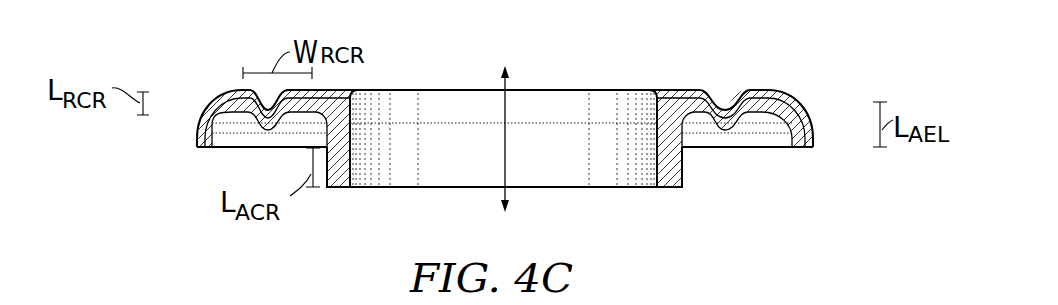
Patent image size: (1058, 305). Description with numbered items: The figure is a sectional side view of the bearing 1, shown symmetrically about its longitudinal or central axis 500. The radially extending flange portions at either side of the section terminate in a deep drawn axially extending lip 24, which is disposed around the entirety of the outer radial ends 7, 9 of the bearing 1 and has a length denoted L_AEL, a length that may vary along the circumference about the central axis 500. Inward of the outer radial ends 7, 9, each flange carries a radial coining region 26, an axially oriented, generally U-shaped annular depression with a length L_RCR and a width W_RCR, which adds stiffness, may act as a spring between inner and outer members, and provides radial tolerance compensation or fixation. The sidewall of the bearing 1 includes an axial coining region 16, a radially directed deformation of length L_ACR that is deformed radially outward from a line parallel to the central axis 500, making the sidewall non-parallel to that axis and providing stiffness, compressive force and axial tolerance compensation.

The bearing 1 is at (818, 100).
The outer radial end 7 is at (197, 142).
The outer radial end 9 is at (808, 148).
The axial coining region 16 is at (682, 187).
The axially extending lip 24 is at (200, 147).
The radial coining region 26 is at (268, 131).
The central axis 500 is at (510, 96).